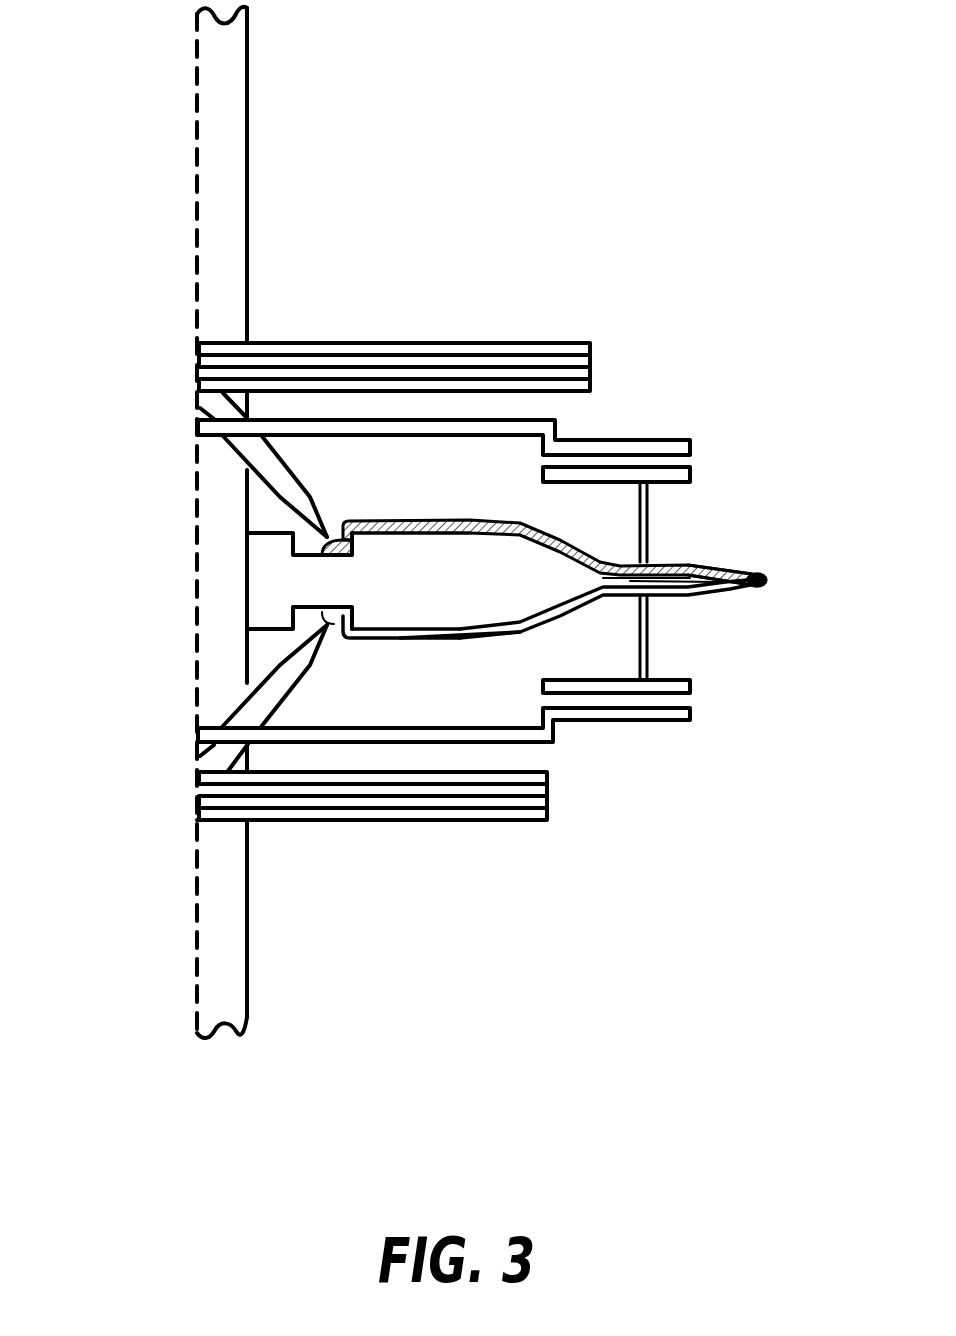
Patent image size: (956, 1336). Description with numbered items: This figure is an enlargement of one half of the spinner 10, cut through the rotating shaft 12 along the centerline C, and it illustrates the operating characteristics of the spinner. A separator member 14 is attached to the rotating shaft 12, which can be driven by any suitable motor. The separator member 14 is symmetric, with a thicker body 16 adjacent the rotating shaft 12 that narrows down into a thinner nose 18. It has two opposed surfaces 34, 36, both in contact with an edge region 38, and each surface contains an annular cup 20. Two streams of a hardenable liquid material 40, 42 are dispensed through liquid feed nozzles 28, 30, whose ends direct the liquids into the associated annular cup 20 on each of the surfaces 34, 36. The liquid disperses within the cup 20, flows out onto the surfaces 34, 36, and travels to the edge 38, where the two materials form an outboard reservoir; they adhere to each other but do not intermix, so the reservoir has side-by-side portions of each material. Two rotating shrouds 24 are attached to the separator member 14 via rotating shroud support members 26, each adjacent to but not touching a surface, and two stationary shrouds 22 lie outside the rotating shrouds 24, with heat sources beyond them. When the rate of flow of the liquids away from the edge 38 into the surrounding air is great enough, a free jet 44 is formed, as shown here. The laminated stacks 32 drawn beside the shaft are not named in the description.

The spinner 10 is at (433, 180).
The rotating shaft 12 is at (227, 928).
The separator member 14 is at (562, 520).
The body 16 is at (530, 603).
The nose 18 is at (680, 565).
The annular cup 20 is at (337, 640).
The stationary shroud 22 is at (665, 442).
The rotating shroud 24 is at (680, 475).
The rotating shroud support member 26 is at (650, 530).
The liquid feed nozzle 28 is at (252, 715).
The liquid feed nozzle 30 is at (257, 452).
The laminated stack 32 is at (543, 342).
The opposed surface 34 is at (475, 522).
The opposed surface 36 is at (463, 637).
The edge region 38 is at (717, 582).
The hardenable liquid material 40 is at (365, 627).
The hardenable liquid material 42 is at (397, 522).
The free jet 44 is at (752, 573).
The centerline C is at (200, 995).